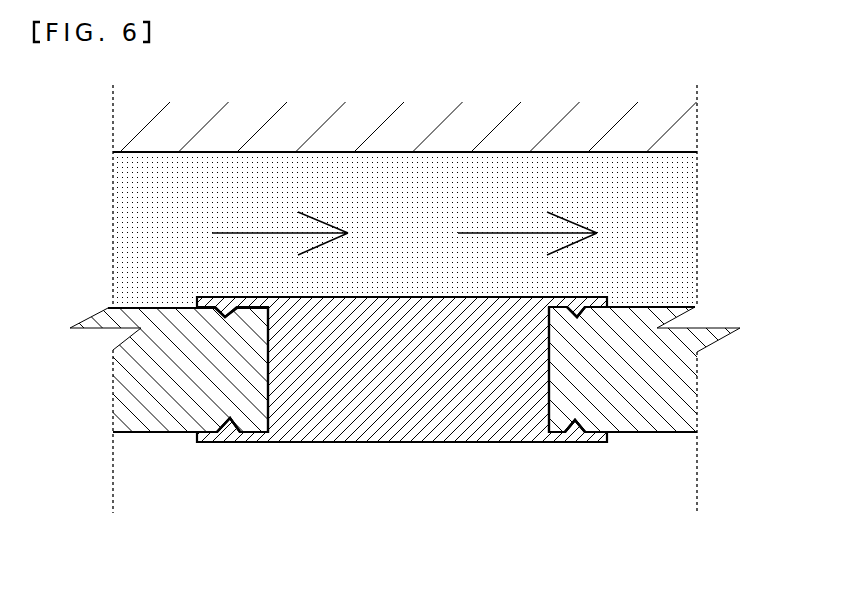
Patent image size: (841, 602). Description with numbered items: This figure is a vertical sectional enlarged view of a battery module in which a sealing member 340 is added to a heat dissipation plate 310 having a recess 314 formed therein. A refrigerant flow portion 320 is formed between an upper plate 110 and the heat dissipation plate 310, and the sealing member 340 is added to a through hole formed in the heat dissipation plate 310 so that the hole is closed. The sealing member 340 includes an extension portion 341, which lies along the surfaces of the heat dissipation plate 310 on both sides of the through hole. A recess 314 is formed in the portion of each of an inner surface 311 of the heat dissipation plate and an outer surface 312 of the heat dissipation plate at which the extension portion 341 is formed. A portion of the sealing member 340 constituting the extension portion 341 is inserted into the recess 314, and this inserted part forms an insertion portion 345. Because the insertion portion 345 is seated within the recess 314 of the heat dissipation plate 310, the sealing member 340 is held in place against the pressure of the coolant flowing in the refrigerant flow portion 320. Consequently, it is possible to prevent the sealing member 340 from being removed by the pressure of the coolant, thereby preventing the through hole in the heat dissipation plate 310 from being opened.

The upper plate 110 is at (660, 128).
The refrigerant flow portion 320 is at (663, 208).
The heat dissipation plate 310 is at (667, 370).
The outer surface of the heat dissipation plate 312 is at (650, 305).
The recess 314 is at (573, 430).
The inner surface of the heat dissipation plate 311 is at (648, 432).
The sealing member 340 is at (412, 443).
The insertion portion 345 is at (578, 440).
The extension portion 341 is at (598, 440).